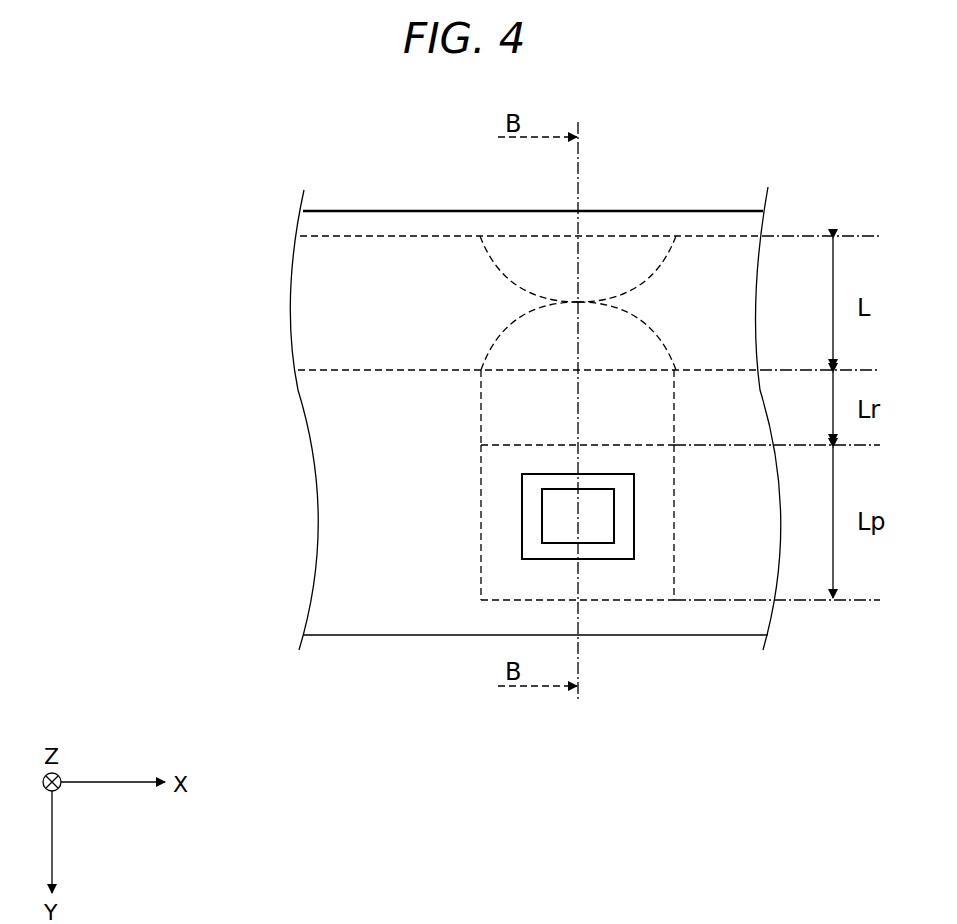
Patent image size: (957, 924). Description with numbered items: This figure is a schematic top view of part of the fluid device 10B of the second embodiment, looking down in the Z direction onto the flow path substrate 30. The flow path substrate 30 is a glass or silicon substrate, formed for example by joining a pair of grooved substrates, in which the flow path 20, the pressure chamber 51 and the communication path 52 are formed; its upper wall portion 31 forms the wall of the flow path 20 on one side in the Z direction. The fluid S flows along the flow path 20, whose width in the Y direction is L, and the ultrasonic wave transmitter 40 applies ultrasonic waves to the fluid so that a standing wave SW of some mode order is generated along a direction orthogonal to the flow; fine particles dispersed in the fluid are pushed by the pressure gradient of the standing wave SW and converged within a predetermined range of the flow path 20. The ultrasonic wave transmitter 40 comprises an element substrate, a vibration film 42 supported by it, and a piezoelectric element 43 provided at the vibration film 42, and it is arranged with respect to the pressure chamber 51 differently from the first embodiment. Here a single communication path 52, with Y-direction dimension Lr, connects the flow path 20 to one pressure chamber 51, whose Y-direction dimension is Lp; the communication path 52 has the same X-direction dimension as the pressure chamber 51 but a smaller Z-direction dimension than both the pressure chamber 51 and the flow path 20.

The fluid device 10B is at (300, 127).
The flow path 20 is at (735, 232).
The flow path substrate 30 is at (380, 210).
The upper wall portion 31 is at (425, 210).
The ultrasonic wave transmitter 40 is at (508, 520).
The vibration film 42 is at (634, 536).
The piezoelectric element 43 is at (614, 500).
The pressure chamber 51 is at (674, 592).
The communication path 52 is at (674, 422).
The standing wave SW is at (660, 268).